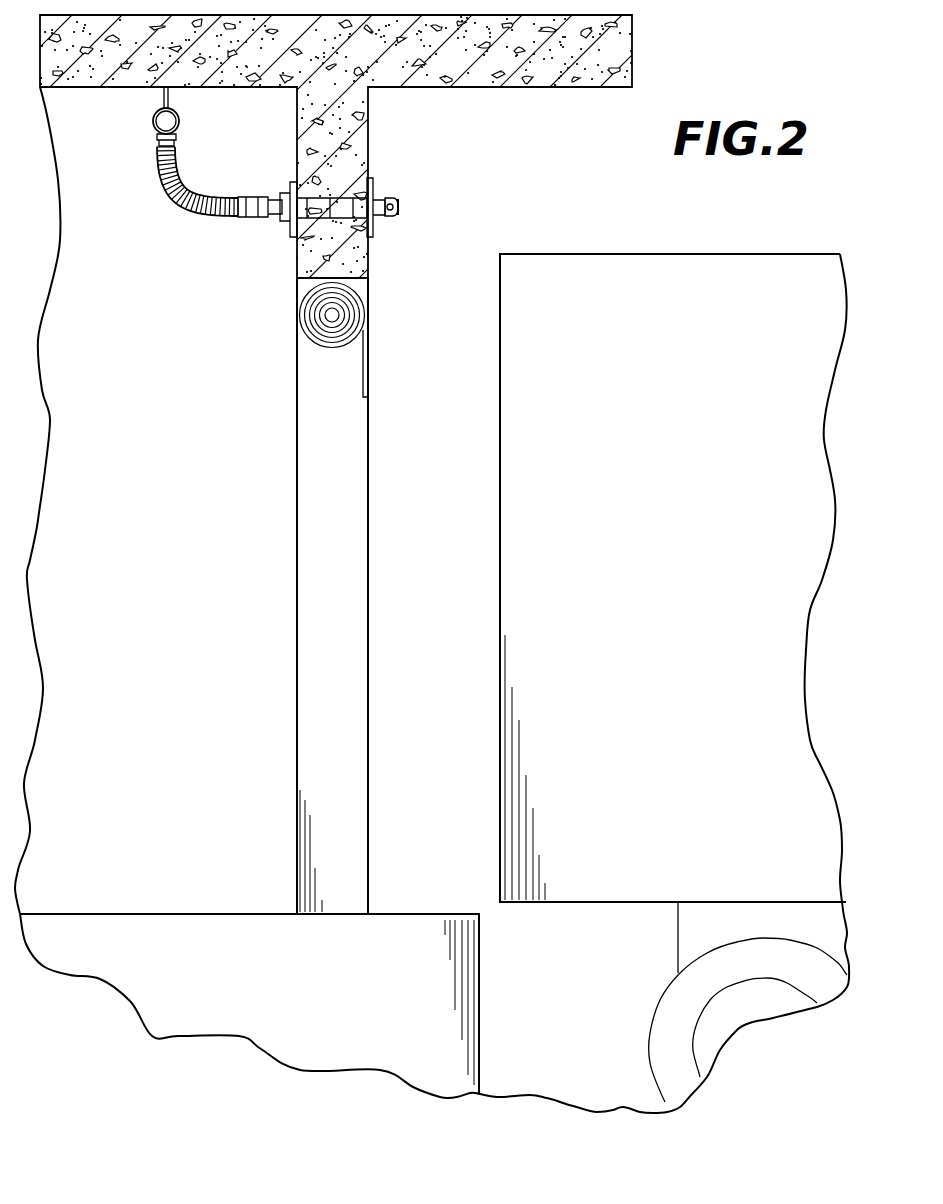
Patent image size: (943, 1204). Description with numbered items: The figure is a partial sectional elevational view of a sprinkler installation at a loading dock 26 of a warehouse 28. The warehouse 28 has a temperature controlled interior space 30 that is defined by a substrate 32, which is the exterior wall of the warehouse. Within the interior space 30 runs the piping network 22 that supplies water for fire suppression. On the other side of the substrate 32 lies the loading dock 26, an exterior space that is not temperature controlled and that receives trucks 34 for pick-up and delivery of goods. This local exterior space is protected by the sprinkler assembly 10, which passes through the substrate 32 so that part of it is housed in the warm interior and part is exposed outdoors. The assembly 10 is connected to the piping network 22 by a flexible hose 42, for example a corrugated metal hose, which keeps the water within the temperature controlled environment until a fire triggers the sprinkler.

The sprinkler assembly 10 is at (400, 197).
The piping network 22 is at (181, 117).
The loading dock 26 is at (406, 912).
The warehouse 28 is at (68, 275).
The temperature controlled interior space 30 is at (166, 515).
The substrate 32 is at (355, 492).
The truck 34 is at (592, 903).
The flexible hose 42 is at (176, 200).